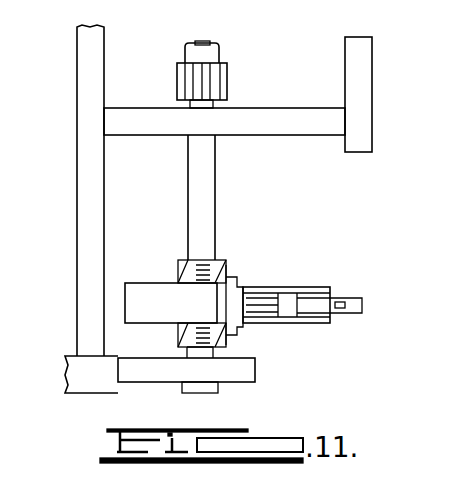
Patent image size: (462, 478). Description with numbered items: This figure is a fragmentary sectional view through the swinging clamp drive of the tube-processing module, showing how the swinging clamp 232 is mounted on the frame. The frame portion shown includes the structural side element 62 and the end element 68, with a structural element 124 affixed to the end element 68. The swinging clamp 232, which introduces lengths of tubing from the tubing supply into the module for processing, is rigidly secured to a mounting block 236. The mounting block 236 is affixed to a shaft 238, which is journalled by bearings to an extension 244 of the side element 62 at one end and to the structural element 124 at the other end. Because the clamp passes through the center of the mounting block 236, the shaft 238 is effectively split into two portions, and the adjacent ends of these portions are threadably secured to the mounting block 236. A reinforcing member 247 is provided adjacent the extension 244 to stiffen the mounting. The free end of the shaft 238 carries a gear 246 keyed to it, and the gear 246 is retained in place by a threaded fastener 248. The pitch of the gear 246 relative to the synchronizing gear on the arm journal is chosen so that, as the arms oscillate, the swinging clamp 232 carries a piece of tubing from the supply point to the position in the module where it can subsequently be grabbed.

The structural side element 62 is at (73, 375).
The end element 68 is at (80, 195).
The structural element 124 is at (290, 128).
The swinging clamp 232 is at (292, 287).
The mounting block 236 is at (225, 263).
The shaft 238 is at (197, 175).
The extension 244 is at (256, 375).
The gear 246 is at (228, 75).
The reinforcing member 247 is at (367, 82).
The threaded fastener 248 is at (220, 53).